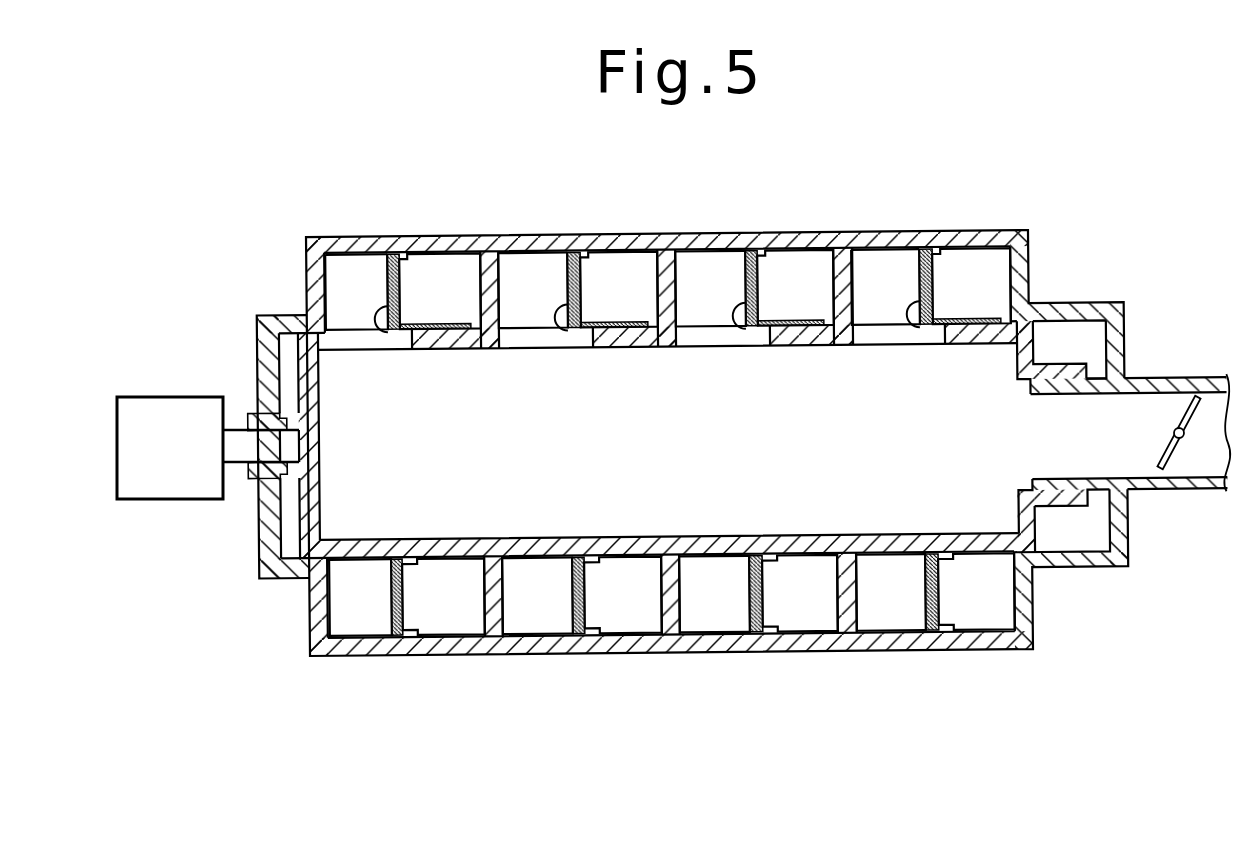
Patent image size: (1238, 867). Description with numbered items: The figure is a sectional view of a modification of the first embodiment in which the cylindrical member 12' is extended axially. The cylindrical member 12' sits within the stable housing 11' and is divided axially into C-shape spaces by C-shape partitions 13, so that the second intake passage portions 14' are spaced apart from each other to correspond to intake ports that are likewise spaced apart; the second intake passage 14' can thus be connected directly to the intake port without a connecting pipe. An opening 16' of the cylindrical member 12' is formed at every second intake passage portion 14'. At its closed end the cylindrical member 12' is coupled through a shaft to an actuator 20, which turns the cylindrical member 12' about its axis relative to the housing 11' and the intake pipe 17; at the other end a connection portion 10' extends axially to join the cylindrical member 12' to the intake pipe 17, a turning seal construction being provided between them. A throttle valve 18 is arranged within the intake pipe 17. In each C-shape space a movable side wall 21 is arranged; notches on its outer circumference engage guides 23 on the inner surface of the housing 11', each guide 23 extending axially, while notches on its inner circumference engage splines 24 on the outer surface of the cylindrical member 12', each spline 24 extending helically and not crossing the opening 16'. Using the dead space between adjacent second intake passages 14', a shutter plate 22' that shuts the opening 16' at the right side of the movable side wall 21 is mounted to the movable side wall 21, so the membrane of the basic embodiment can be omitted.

The connection portion 10' is at (1065, 552).
The housing 11' is at (717, 414).
The cylindrical member 12' is at (683, 440).
The C-shape partition 13 is at (838, 588).
The second intake passage portion 14' is at (622, 289).
The opening 16' is at (675, 371).
The intake pipe 17 is at (1171, 381).
The throttle valve 18 is at (1198, 412).
The actuator 20 is at (170, 497).
The movable side wall 21 is at (917, 328).
The shutter plate 22' is at (705, 288).
The guide 23 is at (905, 253).
The spline 24 is at (888, 561).